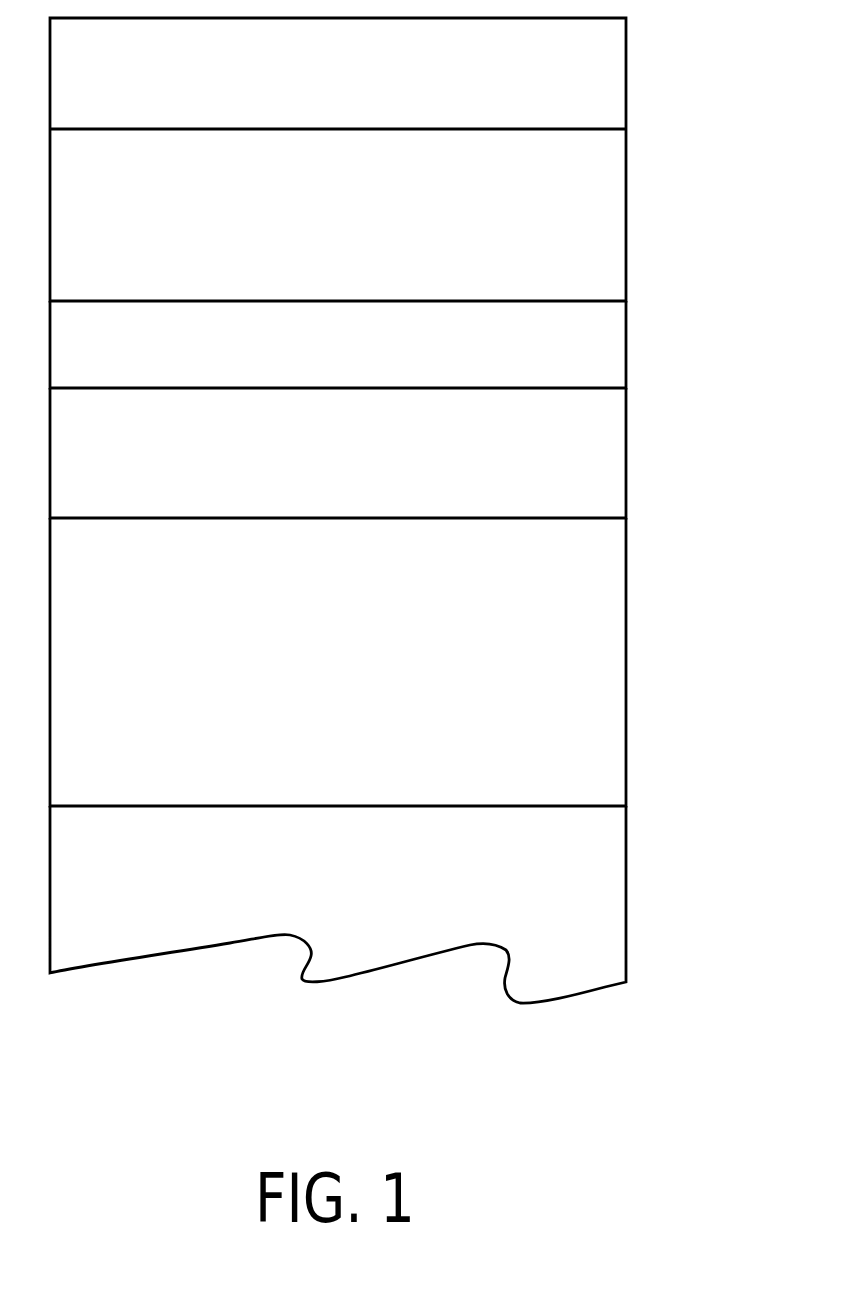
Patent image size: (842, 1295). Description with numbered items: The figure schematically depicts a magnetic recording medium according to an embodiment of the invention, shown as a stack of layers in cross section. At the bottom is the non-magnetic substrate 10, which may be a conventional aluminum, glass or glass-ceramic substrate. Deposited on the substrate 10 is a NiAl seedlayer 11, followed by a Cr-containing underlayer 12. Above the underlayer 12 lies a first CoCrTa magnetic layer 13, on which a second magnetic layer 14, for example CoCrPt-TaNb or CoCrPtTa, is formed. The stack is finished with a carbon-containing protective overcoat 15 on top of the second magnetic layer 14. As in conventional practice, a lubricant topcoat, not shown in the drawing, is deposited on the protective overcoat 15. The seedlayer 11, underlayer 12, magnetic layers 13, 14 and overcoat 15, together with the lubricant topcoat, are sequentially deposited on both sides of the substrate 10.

The substrate 10 is at (628, 877).
The NiAl seedlayer 11 is at (628, 635).
The Cr-containing underlayer 12 is at (628, 462).
The first CoCrTa magnetic layer 13 is at (628, 348).
The second magnetic layer 14 is at (628, 203).
The carbon-containing protective overcoat 15 is at (628, 47).